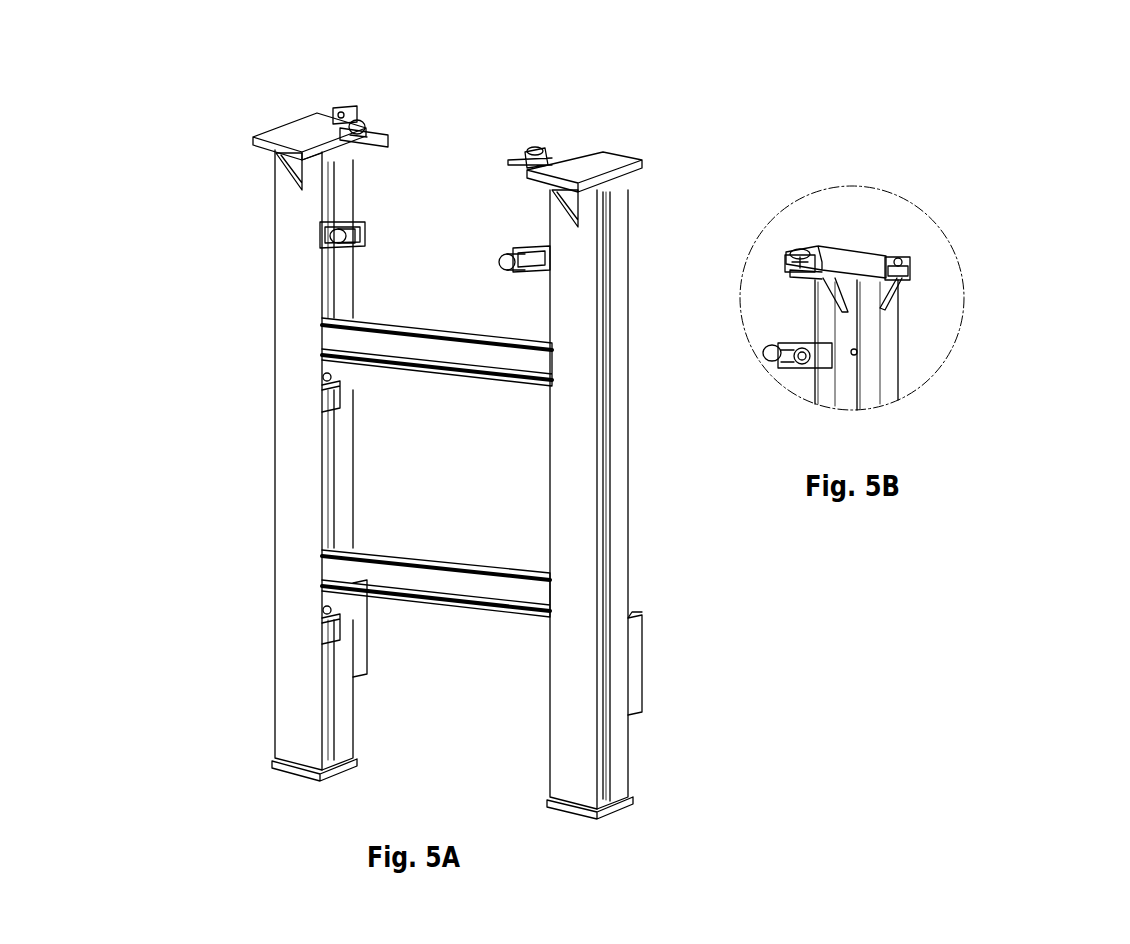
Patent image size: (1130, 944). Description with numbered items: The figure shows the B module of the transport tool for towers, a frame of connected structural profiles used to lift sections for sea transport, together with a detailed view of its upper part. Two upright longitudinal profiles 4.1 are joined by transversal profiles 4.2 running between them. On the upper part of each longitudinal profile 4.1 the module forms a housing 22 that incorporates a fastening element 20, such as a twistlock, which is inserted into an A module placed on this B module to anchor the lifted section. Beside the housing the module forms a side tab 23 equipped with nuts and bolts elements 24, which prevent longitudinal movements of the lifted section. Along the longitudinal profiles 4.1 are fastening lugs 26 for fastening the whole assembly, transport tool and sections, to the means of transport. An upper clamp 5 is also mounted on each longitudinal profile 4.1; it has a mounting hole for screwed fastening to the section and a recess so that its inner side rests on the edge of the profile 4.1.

In FIG. 5A, the longitudinal profile 4.1 is at (585, 360).
In FIG. 5B, the longitudinal profile 4.1 is at (885, 353).
In FIG. 5A, the transversal profile 4.2 is at (440, 358).
In FIG. 5A, the upper clamp 5 is at (513, 250).
In FIG. 5B, the upper clamp 5 is at (823, 357).
In FIG. 5A, the fastening element 20 is at (537, 153).
In FIG. 5B, the fastening element 20 is at (808, 253).
In FIG. 5B, the housing 22 is at (813, 272).
In FIG. 5A, the side tab 23 is at (333, 110).
In FIG. 5B, the side tab 23 is at (900, 267).
In FIG. 5B, the nuts and bolts elements 24 is at (905, 258).
In FIG. 5A, the fastening lug 26 is at (325, 378).